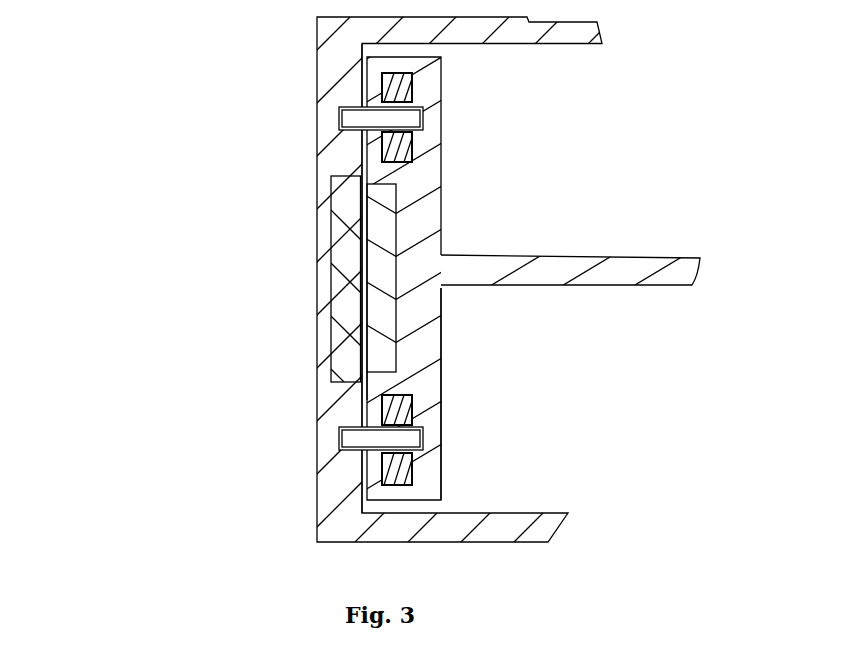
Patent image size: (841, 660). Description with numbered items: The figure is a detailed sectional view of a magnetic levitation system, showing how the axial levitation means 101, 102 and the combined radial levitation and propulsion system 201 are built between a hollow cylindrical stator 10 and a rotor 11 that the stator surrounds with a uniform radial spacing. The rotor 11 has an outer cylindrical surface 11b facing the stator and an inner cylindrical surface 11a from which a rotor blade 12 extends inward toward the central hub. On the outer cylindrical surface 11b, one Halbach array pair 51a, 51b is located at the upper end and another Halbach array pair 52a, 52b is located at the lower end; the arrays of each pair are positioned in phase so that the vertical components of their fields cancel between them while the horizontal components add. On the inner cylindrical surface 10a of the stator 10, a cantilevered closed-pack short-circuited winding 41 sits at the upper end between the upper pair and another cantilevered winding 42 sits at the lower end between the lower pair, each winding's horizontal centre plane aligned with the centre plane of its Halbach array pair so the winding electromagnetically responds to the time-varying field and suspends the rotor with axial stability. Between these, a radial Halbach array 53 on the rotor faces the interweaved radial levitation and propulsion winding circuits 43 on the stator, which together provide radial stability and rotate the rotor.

The stator 10 is at (420, 300).
The inner cylindrical surface 10a is at (262, 278).
The axial levitation means 101 is at (116, 106).
The radial levitation and propulsion system 201 is at (102, 281).
The axial levitation means 102 is at (110, 448).
The rotor 11 is at (535, 250).
The inner cylindrical surface 11a is at (527, 394).
The outer cylindrical surface 11b is at (489, 380).
The rotor blade 12 is at (546, 345).
The cantilevered winding 41 is at (318, 119).
The cantilevered winding 42 is at (318, 440).
The interweaved radial levitation and propulsion winding circuits 43 is at (295, 287).
The halbach array 51a is at (456, 87).
The halbach array 51b is at (456, 147).
The halbach array 52a is at (460, 410).
The halbach array 52b is at (460, 469).
The radial halbach array 53 is at (313, 278).